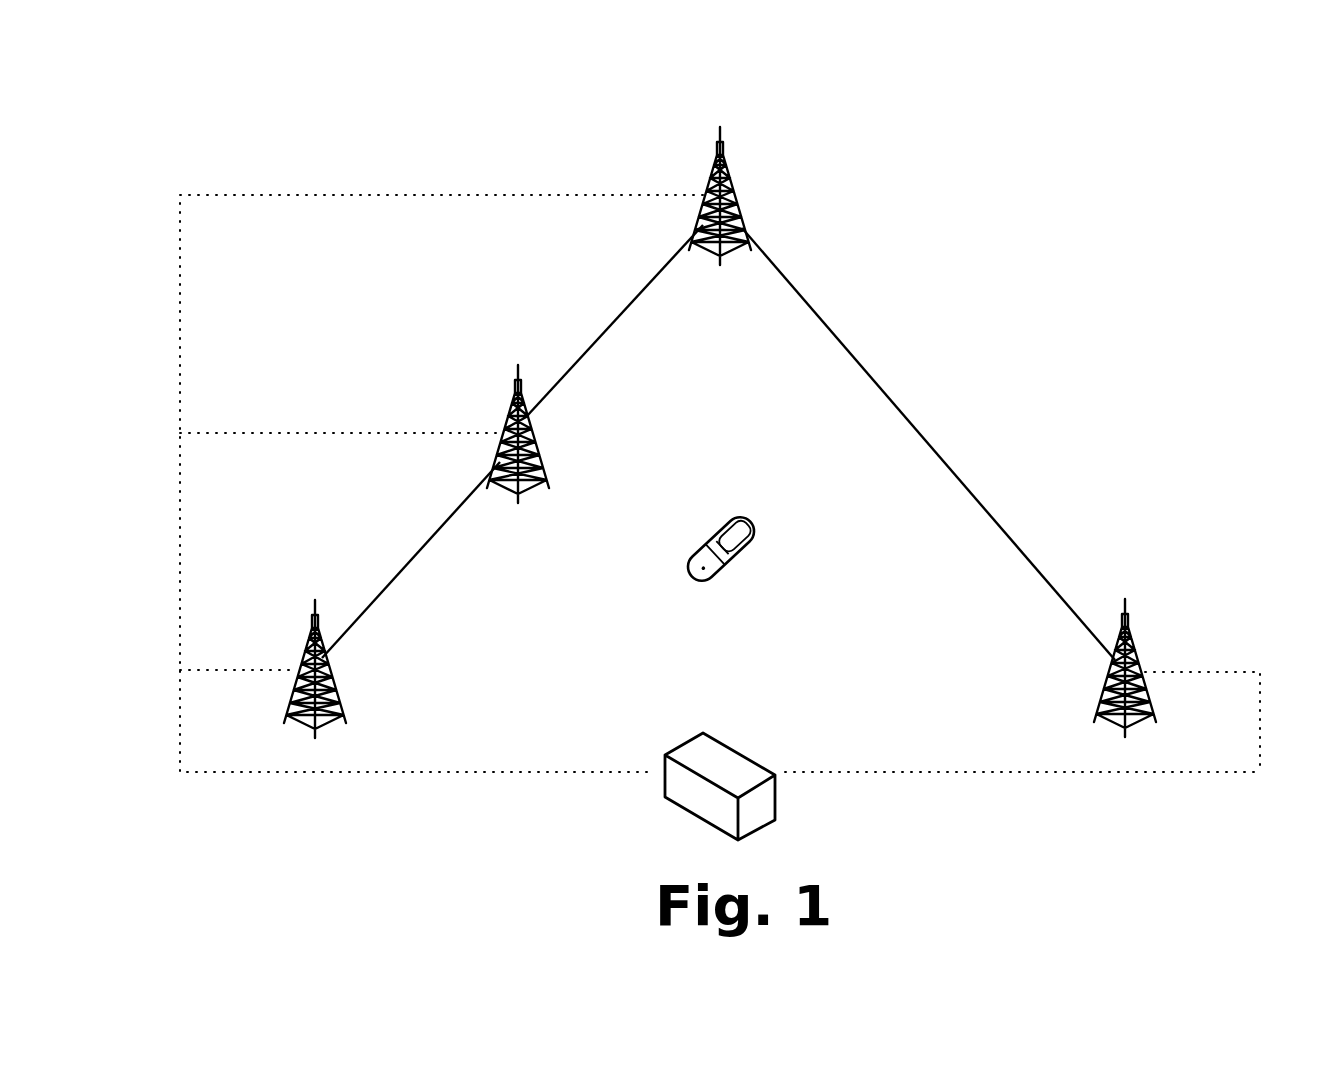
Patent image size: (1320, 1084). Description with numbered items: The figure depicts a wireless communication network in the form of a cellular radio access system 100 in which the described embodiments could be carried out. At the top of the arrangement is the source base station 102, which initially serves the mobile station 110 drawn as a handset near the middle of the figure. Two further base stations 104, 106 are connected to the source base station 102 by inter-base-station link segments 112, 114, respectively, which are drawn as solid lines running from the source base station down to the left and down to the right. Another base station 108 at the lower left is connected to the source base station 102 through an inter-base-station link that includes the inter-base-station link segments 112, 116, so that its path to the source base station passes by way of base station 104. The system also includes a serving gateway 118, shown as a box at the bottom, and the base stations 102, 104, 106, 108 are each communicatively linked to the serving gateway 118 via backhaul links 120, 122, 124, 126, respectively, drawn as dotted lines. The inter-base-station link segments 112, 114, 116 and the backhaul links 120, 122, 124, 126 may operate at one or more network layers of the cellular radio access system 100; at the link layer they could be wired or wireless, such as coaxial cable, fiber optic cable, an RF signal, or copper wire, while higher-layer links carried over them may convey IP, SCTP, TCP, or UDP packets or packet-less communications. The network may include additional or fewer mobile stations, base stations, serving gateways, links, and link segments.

The cellular radio access system 100 is at (203, 132).
The source base station 102 is at (707, 195).
The base station 104 is at (515, 390).
The base station 106 is at (1133, 625).
The base station 108 is at (312, 625).
The mobile station 110 is at (712, 545).
The inter-base-station link segment 112 is at (610, 322).
The inter-base-station link segment 114 is at (922, 428).
The inter-base-station link segment 116 is at (417, 548).
The serving gateway 118 is at (700, 737).
The backhaul link 120 is at (253, 195).
The backhaul link 122 is at (247, 433).
The backhaul link 124 is at (1193, 672).
The backhaul link 126 is at (248, 670).